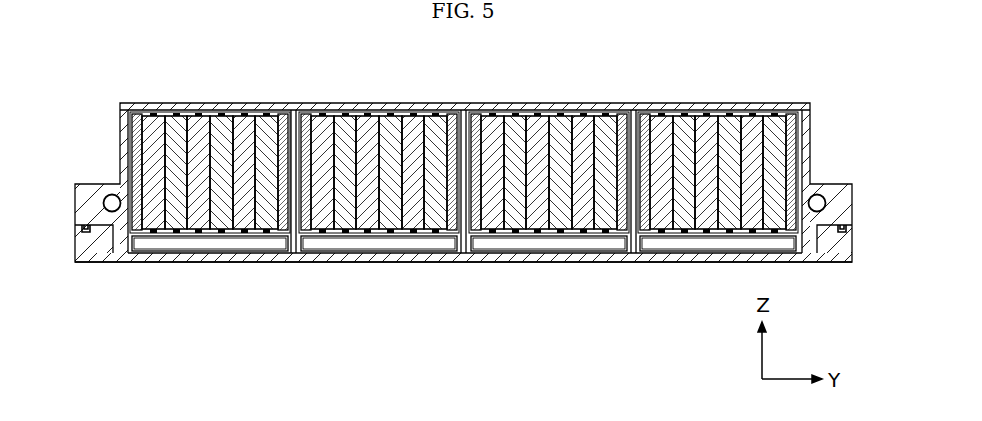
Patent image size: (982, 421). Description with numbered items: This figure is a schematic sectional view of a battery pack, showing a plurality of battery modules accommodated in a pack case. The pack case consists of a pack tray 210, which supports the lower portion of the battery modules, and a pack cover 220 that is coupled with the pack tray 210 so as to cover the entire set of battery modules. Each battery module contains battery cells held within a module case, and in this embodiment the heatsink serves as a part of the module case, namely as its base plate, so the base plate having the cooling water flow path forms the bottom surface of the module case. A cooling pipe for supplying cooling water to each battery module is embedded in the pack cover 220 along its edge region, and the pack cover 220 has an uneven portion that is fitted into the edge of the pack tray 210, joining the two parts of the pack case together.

The pack tray 210 is at (461, 259).
The pack cover 220 is at (458, 105).